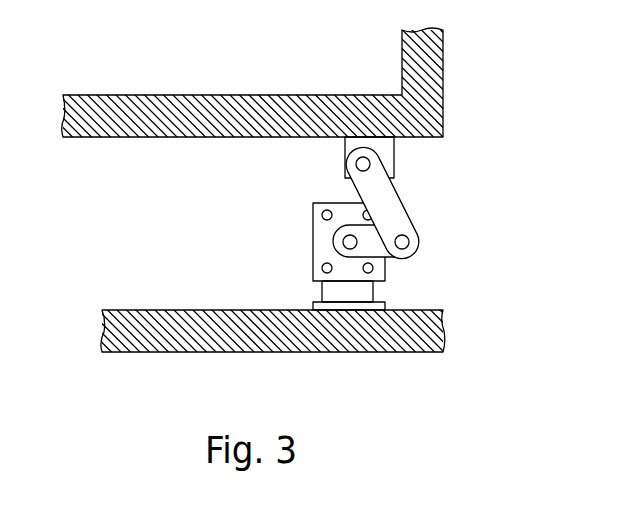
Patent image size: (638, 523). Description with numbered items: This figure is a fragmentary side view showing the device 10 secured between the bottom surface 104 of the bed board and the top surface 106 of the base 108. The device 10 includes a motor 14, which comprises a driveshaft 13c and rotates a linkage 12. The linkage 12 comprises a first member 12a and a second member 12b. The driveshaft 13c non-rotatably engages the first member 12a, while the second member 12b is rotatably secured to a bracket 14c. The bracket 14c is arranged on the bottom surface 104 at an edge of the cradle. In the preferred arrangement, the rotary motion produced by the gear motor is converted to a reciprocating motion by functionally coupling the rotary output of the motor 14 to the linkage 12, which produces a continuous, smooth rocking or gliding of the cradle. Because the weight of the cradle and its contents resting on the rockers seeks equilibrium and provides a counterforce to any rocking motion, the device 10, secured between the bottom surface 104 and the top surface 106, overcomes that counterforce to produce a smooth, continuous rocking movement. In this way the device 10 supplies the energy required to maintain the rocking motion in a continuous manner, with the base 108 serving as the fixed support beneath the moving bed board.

The device 10 is at (450, 185).
The linkage 12 is at (417, 183).
The first member 12a is at (367, 243).
The second member 12b is at (402, 203).
The driveshaft 13c is at (343, 242).
The motor 14 is at (313, 260).
The bracket 14c is at (390, 151).
The bottom surface 104 is at (142, 137).
The top surface 106 is at (147, 310).
The base 108 is at (382, 360).